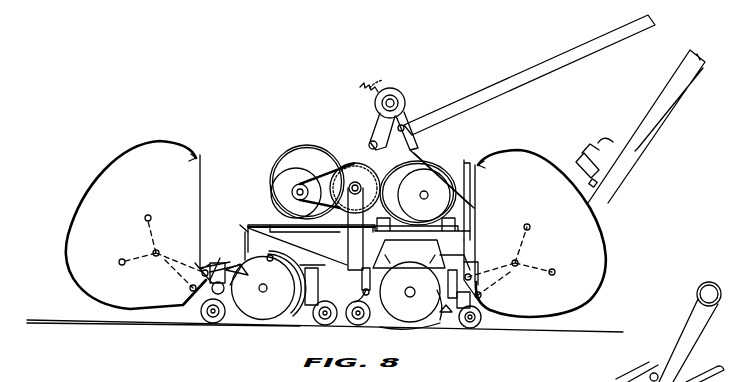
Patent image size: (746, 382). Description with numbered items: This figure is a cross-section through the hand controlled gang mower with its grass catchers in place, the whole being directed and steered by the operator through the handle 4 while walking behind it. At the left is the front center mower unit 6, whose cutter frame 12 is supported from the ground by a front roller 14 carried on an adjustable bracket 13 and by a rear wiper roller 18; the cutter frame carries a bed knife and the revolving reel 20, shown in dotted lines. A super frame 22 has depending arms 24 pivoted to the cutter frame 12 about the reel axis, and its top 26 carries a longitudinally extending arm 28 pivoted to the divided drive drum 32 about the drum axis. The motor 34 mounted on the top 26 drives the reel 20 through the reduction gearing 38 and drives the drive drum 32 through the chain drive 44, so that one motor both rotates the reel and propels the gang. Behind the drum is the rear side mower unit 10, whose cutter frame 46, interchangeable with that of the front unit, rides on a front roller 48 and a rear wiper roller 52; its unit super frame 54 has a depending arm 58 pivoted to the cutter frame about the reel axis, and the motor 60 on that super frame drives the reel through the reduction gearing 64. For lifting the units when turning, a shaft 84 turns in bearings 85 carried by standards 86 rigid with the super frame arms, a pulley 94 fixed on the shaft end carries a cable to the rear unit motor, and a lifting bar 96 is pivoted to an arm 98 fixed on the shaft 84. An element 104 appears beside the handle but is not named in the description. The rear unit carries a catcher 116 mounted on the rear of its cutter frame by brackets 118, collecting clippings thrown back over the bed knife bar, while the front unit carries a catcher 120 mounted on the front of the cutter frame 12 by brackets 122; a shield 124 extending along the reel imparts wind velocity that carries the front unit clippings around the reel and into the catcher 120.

The handle 4 is at (720, 318).
The front center mower unit 6 is at (227, 336).
The rear side mower unit 10 is at (446, 340).
The cutter frame 12 is at (310, 295).
The adjustable brackets 13 is at (233, 305).
The front roller 14 is at (201, 318).
The rear wiper roller 18 is at (315, 325).
The revolving reel 20 is at (243, 295).
The super frame 22 is at (246, 226).
The depending arms 24 is at (263, 288).
The top 26 is at (270, 223).
The longitudinally extending arm 28 is at (467, 238).
The divided drive drum 32 is at (360, 272).
The motor 34 is at (298, 150).
The reduction gearing 38 is at (290, 172).
The chain drive 44 is at (351, 156).
The cutter frame 46 is at (437, 322).
The front roller 48 is at (360, 322).
The rear wiper roller 52 is at (478, 325).
The unit super frame 54 is at (425, 250).
The depending arm 58 is at (460, 255).
The motor 60 is at (410, 166).
The reduction gearing 64 is at (451, 170).
The shaft 84 is at (396, 99).
The bearings 85 is at (410, 140).
The standards 86 is at (470, 186).
The pulley 94 is at (380, 92).
The lifting bar 96 is at (540, 68).
The arm 98 is at (378, 125).
The discharge tube 104 is at (602, 188).
The catchers 116 is at (607, 265).
The brackets 118 is at (510, 273).
The catcher 120 is at (66, 222).
The brackets 122 is at (175, 253).
The shield 124 is at (275, 268).